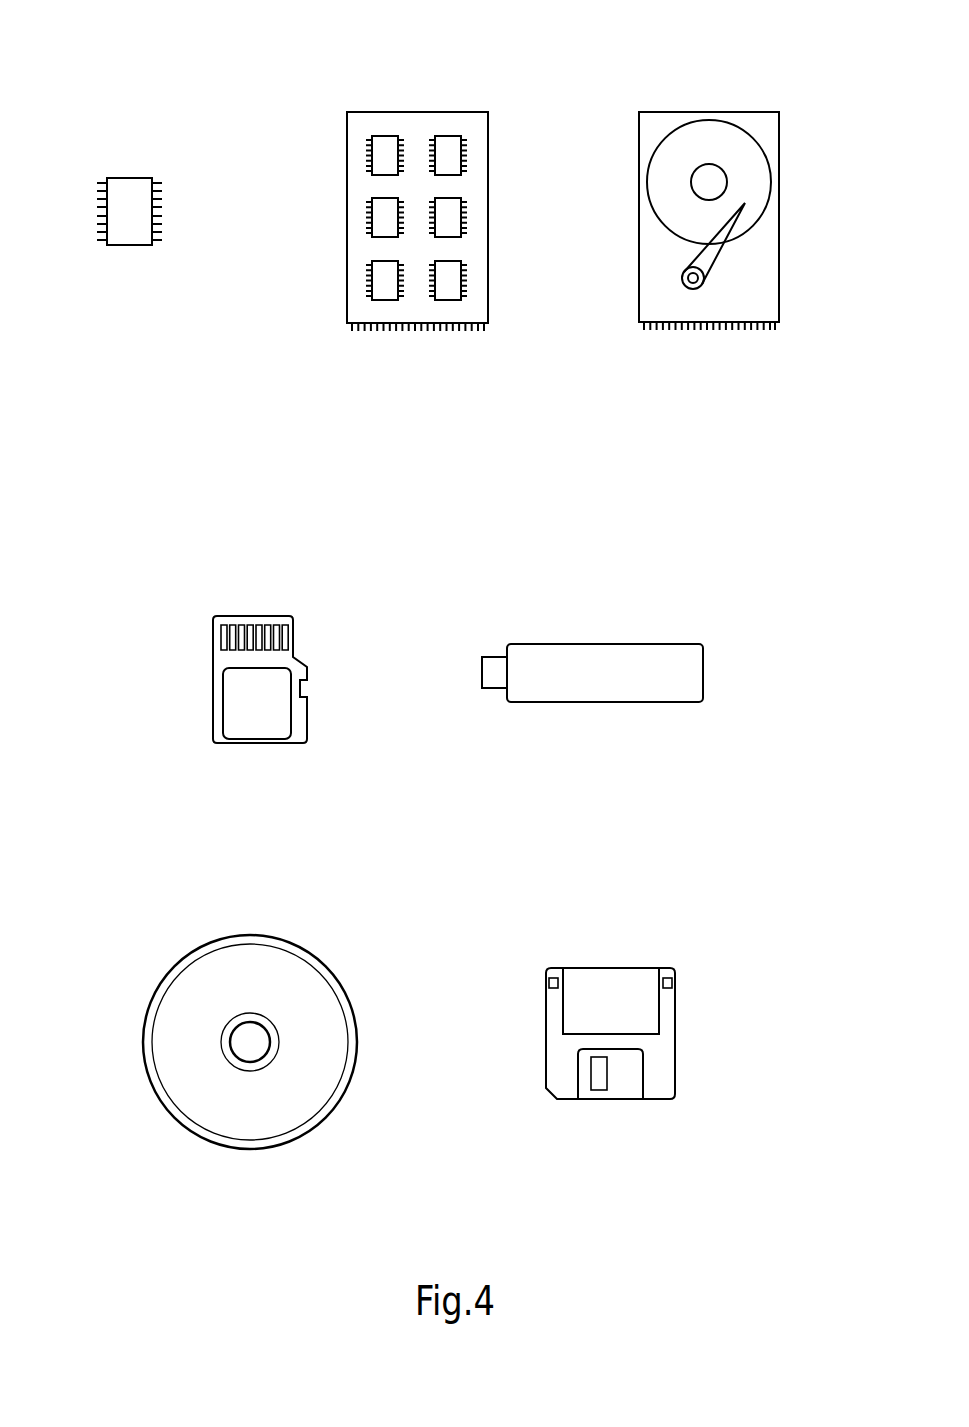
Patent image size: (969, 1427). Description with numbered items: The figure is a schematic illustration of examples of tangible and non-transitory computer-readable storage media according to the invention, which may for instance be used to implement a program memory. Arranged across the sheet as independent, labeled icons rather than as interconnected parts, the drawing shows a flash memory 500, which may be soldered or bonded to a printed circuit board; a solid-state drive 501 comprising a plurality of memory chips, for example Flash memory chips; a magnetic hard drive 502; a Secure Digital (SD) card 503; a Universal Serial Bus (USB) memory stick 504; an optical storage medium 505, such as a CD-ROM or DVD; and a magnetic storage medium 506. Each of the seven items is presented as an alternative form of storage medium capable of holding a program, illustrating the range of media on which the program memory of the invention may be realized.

The flash memory 500 is at (153, 138).
The solid-state drive 501 is at (490, 72).
The magnetic hard drive 502 is at (782, 72).
The Secure Digital (SD) card 503 is at (297, 583).
The Universal Serial Bus (USB) memory stick 504 is at (677, 603).
The optical storage medium 505 is at (337, 931).
The magnetic storage medium 506 is at (670, 931).